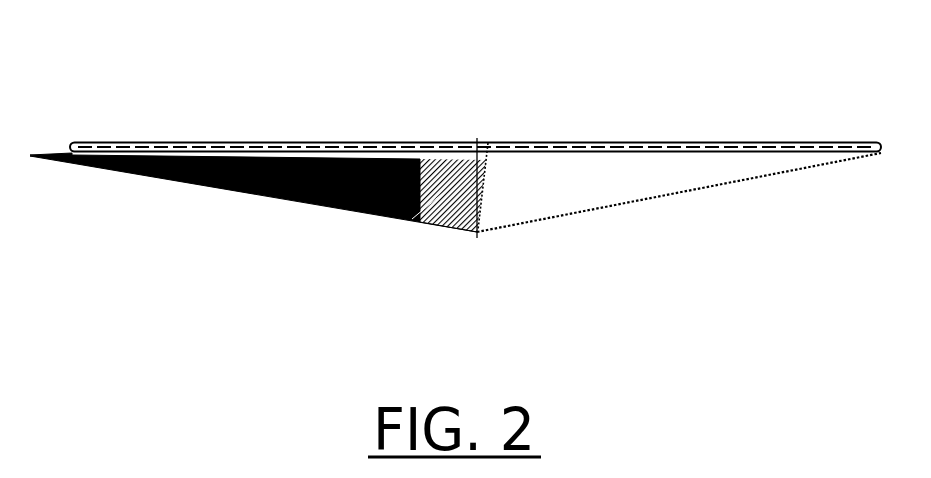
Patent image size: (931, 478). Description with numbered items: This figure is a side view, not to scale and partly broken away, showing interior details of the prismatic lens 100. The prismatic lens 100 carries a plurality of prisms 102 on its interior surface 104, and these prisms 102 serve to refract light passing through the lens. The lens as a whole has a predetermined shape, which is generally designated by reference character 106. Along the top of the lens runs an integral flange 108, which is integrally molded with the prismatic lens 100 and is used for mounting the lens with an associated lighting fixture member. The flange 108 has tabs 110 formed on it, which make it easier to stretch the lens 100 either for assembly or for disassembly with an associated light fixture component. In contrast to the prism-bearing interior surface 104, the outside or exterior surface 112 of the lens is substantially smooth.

The prismatic lens 100 is at (293, 125).
The prisms 102 is at (423, 223).
The interior surface 104 is at (297, 200).
The predetermined shape 106 is at (531, 235).
The integral flange 108 is at (558, 143).
The tabs 110 is at (46, 153).
The exterior surface 112 is at (613, 176).